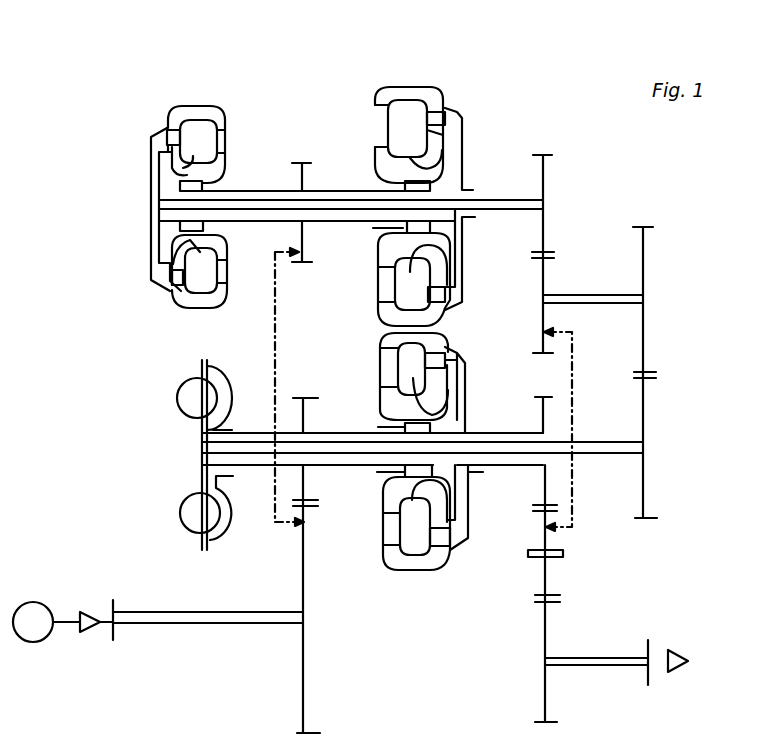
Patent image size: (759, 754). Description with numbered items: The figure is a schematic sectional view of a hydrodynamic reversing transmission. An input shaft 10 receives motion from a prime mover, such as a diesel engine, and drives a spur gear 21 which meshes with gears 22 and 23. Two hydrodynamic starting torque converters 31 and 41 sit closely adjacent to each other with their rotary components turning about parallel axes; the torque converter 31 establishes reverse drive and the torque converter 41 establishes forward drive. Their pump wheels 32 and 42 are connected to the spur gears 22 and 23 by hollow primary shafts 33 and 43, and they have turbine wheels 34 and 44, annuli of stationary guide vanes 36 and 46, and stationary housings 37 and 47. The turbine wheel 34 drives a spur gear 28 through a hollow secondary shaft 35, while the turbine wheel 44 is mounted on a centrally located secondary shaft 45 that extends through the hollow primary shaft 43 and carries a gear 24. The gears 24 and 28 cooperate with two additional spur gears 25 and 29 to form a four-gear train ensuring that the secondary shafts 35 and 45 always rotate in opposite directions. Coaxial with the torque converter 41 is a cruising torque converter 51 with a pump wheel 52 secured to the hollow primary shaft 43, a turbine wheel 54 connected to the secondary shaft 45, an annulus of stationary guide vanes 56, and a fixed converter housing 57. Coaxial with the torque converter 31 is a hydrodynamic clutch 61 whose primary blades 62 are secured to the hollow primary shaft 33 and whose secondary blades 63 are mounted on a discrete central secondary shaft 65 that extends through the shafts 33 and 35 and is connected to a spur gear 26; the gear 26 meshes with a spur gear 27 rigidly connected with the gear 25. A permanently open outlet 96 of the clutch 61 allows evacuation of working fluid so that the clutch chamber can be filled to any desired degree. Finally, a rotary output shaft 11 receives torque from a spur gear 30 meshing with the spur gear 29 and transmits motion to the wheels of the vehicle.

The input shaft 10 is at (197, 627).
The output shaft 11 is at (577, 657).
The spur gear 21 is at (309, 684).
The spur gear 22 is at (308, 482).
The spur gear 23 is at (304, 237).
The gear 24 is at (546, 180).
The spur gear 25 is at (545, 280).
The spur gear 26 is at (645, 412).
The spur gear 27 is at (645, 280).
The spur gear 28 is at (544, 482).
The spur gear 29 is at (543, 538).
The spur gear 30 is at (545, 698).
The hydrodynamic starting torque converter 31 is at (420, 488).
The pump wheel 32 is at (440, 393).
The hollow primary shaft 33 is at (337, 432).
The turbine wheel 34 is at (440, 358).
The hollow secondary shaft 35 is at (497, 436).
The annulus of stationary guide vanes 36 is at (385, 365).
The stationary housing 37 is at (413, 570).
The hydrodynamic starting torque converter 41 is at (421, 176).
The pump wheel 42 is at (433, 150).
The hollow primary shaft 43 is at (323, 198).
The turbine wheel 44 is at (448, 110).
The secondary shaft 45 is at (509, 211).
The annulus of stationary guide vanes 46 is at (380, 132).
The stationary housing 47 is at (408, 87).
The cruising torque converter 51 is at (179, 167).
The pump wheel 52 is at (177, 163).
The turbine wheel 54 is at (168, 127).
The annulus of stationary guide vanes 56 is at (223, 137).
The fixed converter housing 57 is at (215, 105).
The hydrodynamic clutch 61 is at (182, 546).
The primary blades 62 is at (217, 513).
The secondary blades 63 is at (188, 510).
The secondary shaft 65 is at (608, 455).
The permanently open outlet 96 is at (203, 362).